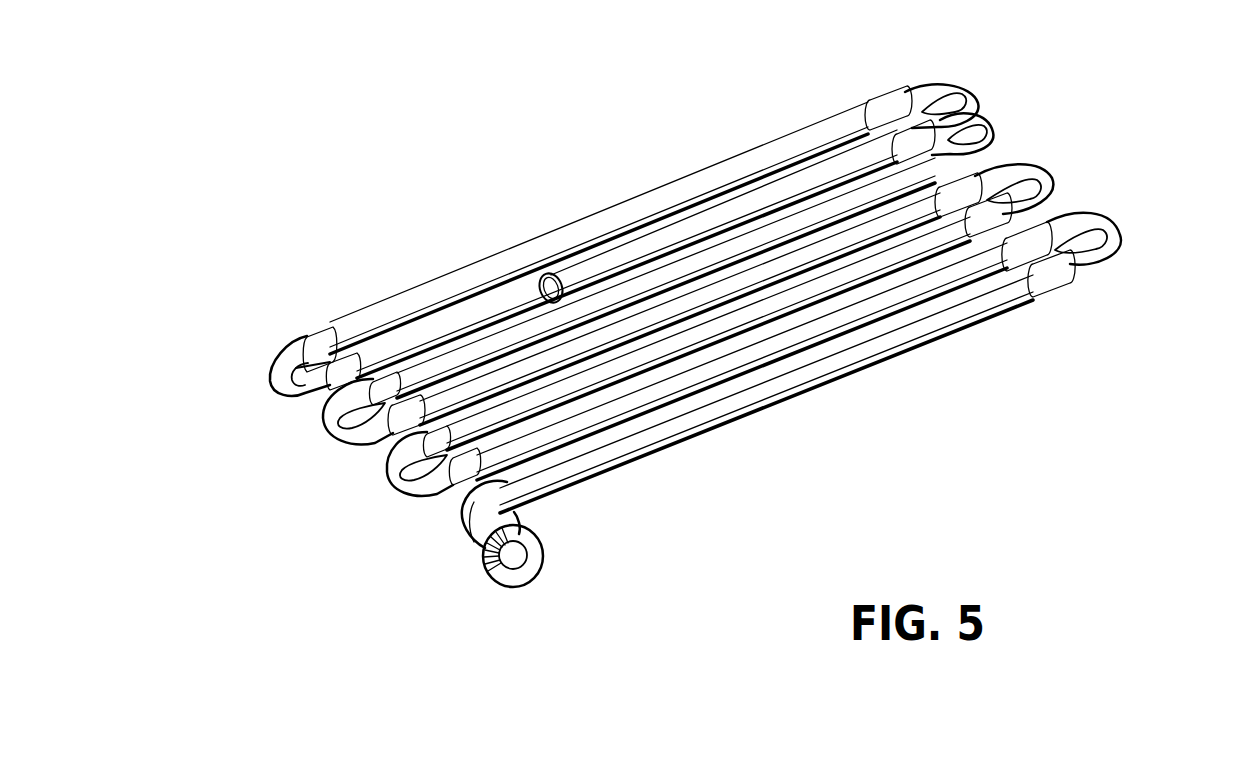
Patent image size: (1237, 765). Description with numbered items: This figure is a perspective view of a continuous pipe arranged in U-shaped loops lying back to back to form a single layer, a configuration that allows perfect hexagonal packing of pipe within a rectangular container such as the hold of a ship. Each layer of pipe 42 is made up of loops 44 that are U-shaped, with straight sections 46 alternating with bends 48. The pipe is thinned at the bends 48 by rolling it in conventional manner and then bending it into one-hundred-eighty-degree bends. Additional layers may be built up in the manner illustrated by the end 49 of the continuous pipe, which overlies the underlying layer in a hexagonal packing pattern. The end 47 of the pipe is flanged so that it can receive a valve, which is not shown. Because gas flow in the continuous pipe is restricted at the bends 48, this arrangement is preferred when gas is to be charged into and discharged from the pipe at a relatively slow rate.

The layer of pipe 42 is at (717, 325).
The loops 44 is at (1005, 107).
The straight sections 46 is at (567, 243).
The end 47 is at (532, 575).
The bends 48 is at (300, 393).
The end of the continuous pipe 49 is at (798, 177).